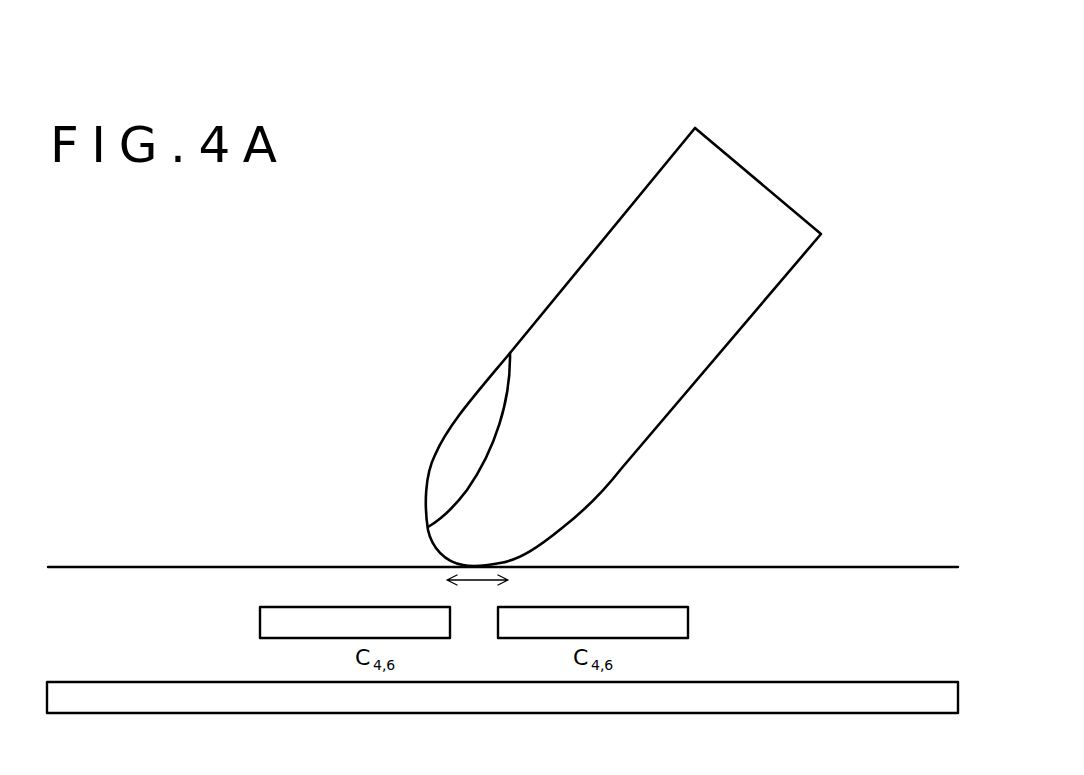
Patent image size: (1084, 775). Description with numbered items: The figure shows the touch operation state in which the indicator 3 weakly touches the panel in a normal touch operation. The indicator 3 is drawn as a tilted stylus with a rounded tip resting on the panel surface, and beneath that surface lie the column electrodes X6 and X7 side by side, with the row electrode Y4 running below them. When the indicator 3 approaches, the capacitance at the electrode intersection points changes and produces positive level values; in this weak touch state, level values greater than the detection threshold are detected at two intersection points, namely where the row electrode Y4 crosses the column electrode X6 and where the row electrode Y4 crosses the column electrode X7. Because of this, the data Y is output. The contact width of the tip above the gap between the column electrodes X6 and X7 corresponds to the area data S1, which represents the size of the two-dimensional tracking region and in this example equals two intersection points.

The indicator 3 is at (557, 295).
The area data S1 is at (477, 592).
The column electrode X6 is at (355, 622).
The column electrode X7 is at (593, 622).
The row electrode Y4 is at (502, 697).